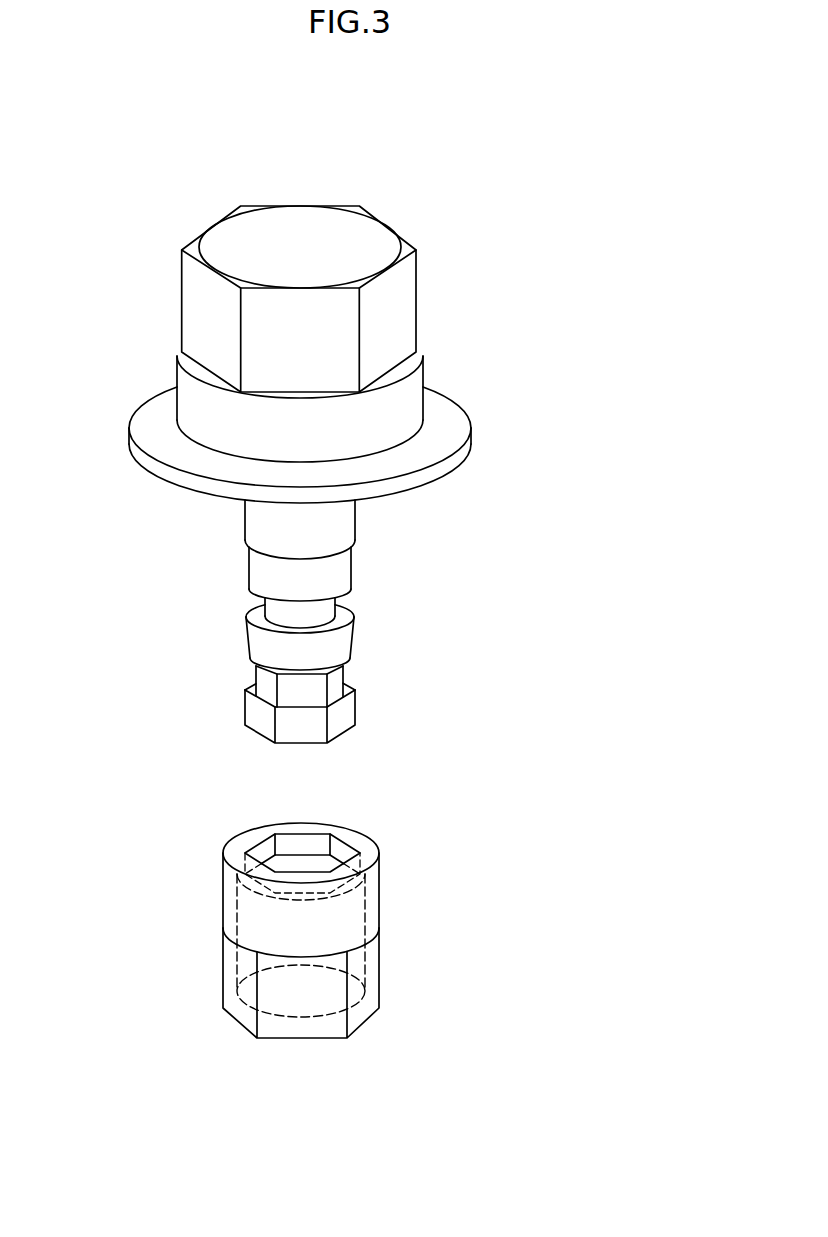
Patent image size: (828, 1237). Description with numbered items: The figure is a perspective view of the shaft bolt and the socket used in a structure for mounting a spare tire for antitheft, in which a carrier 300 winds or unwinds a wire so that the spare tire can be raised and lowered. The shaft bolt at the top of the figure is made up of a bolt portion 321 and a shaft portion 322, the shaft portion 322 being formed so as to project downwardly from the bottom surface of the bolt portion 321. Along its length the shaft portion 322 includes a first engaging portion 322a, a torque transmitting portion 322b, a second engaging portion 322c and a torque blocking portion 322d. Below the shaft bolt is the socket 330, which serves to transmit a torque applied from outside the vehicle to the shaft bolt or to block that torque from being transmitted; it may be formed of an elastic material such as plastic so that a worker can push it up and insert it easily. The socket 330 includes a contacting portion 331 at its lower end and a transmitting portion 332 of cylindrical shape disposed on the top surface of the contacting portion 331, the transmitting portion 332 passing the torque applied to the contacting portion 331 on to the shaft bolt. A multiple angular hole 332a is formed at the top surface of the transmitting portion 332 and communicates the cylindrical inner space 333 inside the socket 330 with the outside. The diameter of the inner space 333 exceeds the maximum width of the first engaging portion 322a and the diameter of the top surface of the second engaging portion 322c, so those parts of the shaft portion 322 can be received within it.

The carrier 300 is at (620, 354).
The bolt portion 321 is at (515, 249).
The shaft portion 322 is at (515, 463).
The first engaging portion 322a is at (340, 713).
The torque transmitting portion 322b is at (340, 668).
The second engaging portion 322c is at (333, 643).
The torque blocking portion 322d is at (325, 610).
The socket 330 is at (500, 908).
The contacting portion 331 is at (380, 993).
The transmitting portion 332 is at (380, 887).
The multiple angular hole 332a is at (308, 845).
The inner space 333 is at (278, 920).